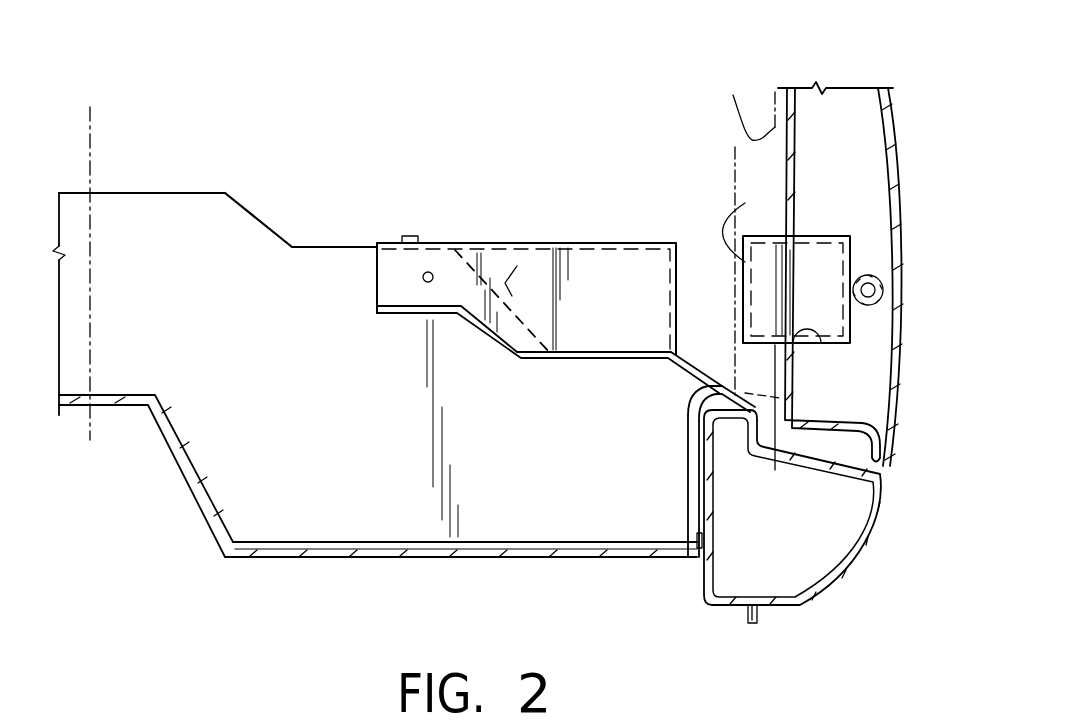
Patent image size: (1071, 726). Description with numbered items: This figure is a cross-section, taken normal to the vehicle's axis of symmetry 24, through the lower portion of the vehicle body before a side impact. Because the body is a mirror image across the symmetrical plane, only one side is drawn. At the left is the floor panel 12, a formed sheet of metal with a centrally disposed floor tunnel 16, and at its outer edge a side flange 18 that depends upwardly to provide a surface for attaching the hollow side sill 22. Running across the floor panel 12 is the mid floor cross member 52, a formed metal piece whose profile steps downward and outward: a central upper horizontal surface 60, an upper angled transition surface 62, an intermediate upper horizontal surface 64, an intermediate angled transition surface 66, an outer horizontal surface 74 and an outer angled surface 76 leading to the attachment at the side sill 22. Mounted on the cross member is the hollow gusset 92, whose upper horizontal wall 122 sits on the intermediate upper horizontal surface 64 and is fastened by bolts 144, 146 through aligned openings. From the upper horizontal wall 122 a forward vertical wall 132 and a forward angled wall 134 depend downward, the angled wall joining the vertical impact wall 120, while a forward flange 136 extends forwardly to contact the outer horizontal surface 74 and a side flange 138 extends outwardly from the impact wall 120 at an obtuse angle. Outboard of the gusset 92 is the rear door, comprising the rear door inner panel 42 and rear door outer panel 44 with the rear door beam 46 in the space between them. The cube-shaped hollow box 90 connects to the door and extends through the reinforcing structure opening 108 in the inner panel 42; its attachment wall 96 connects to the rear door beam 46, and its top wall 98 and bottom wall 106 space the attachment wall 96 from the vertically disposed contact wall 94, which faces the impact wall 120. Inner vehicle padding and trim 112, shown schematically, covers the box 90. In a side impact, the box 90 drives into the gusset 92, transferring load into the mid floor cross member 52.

The floor panel 12 is at (522, 556).
The floor tunnel 16 is at (132, 402).
The side flange 18 is at (698, 540).
The side sill 22 is at (850, 562).
The axis of symmetry 24 is at (90, 140).
The rear door inner panel 42 is at (795, 390).
The rear door outer panel 44 is at (898, 360).
The rear door beam 46 is at (881, 272).
The mid floor cross member 52 is at (262, 186).
The central upper horizontal surface 60 is at (155, 193).
The upper angled transition surface 62 is at (269, 218).
The intermediate upper horizontal surface 64 is at (339, 245).
The intermediate angled transition surface 66 is at (518, 258).
The outer horizontal surface 74 is at (660, 350).
The outer angled surface 76 is at (700, 374).
The box-shaped reinforcing structure 90 is at (818, 228).
The gusset 92 is at (489, 228).
The contact wall 94 is at (749, 243).
The attachment wall 96 is at (853, 253).
The top wall 98 is at (835, 234).
The bottom wall 106 is at (781, 429).
The reinforcing structure opening 108 is at (840, 360).
The inner vehicle padding and trim 112 is at (733, 95).
The vertical impact wall 120 is at (678, 266).
The upper horizontal wall 122 is at (578, 250).
The forward vertical wall 132 is at (386, 279).
The forward angled wall 134 is at (577, 283).
The forward flange 136 is at (483, 330).
The side flange 138 is at (692, 368).
The bolt 144 is at (405, 235).
The bolt 146 is at (428, 271).